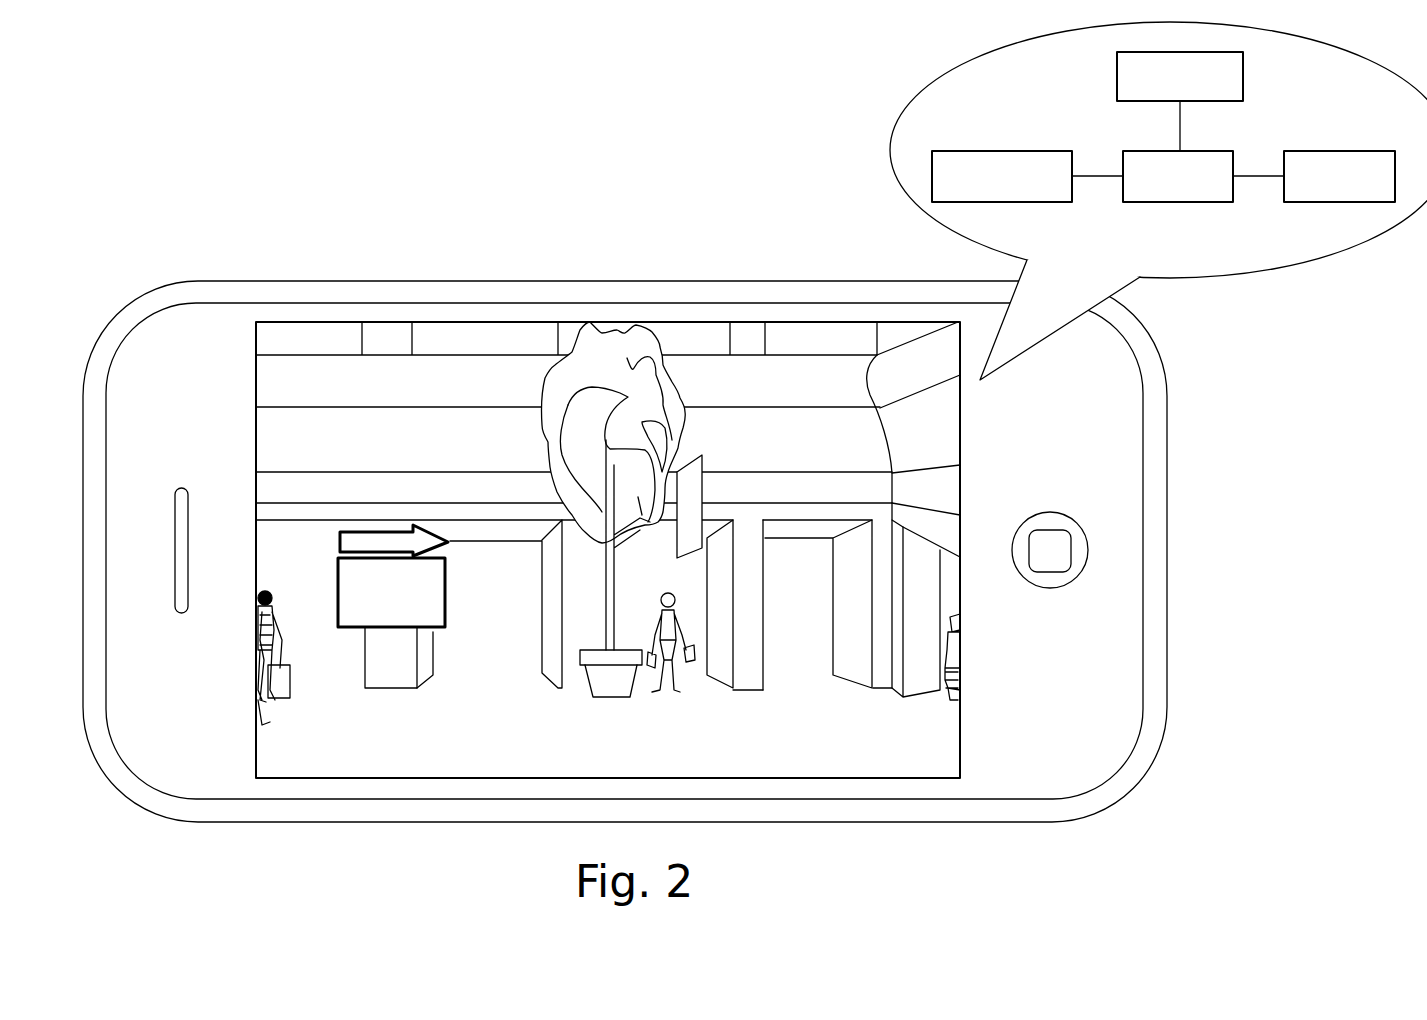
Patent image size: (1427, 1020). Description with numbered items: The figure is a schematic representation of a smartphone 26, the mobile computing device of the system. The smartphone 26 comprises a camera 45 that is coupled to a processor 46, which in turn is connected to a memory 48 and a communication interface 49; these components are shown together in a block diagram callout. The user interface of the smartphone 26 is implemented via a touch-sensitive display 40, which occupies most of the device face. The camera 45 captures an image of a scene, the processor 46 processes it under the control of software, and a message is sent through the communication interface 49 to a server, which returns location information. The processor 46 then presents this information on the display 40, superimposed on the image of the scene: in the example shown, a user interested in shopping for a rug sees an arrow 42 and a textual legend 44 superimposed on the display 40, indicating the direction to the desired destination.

The smartphone 26 is at (1167, 506).
The touch-sensitive display 40 is at (798, 765).
The arrow 42 is at (377, 532).
The textual legend 44 is at (352, 628).
The camera 45 is at (1003, 202).
The processor 46 is at (1227, 202).
The memory 48 is at (1378, 151).
The communication interface 49 is at (1243, 72).